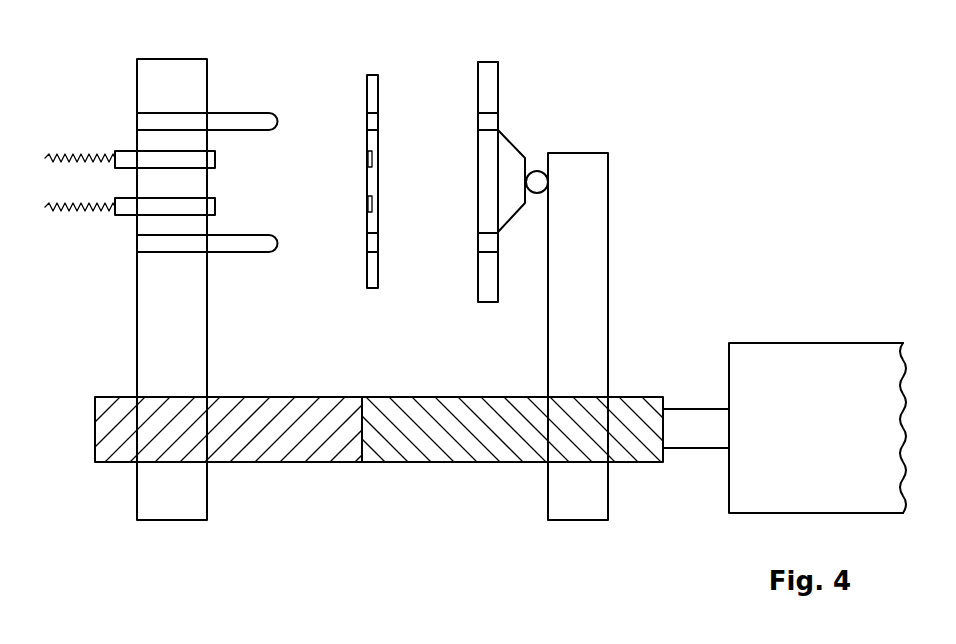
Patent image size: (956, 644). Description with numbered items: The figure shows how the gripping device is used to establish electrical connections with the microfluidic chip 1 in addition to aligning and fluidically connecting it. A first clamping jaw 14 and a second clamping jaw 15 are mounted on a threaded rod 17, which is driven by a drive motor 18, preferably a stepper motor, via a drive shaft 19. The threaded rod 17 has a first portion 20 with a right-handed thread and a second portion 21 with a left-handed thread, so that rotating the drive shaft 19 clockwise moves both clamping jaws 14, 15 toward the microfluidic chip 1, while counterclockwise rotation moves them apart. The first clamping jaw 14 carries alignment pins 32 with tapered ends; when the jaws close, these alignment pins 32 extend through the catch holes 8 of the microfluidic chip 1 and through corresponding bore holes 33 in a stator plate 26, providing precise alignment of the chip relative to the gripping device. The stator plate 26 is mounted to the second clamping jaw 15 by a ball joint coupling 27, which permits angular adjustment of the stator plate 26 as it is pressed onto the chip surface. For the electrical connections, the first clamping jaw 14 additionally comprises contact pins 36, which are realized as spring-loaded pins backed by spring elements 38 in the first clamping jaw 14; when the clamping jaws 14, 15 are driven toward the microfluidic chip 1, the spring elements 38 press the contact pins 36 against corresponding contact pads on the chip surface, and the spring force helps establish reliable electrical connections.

The microfluidic chip 1 is at (375, 90).
The catch holes 8 is at (372, 122).
The first clamping jaw 14 is at (207, 359).
The second clamping jaw 15 is at (598, 333).
The threaded rod 17 is at (393, 385).
The drive motor 18 is at (813, 355).
The drive shaft 19 is at (698, 417).
The first portion 20 is at (313, 448).
The second portion 21 is at (417, 450).
The stator plate 26 is at (490, 72).
The ball joint coupling 27 is at (537, 185).
The alignment pins 32 is at (272, 117).
The bore holes 33 is at (492, 120).
The contact pins 36 is at (215, 158).
The spring elements 38 is at (80, 150).